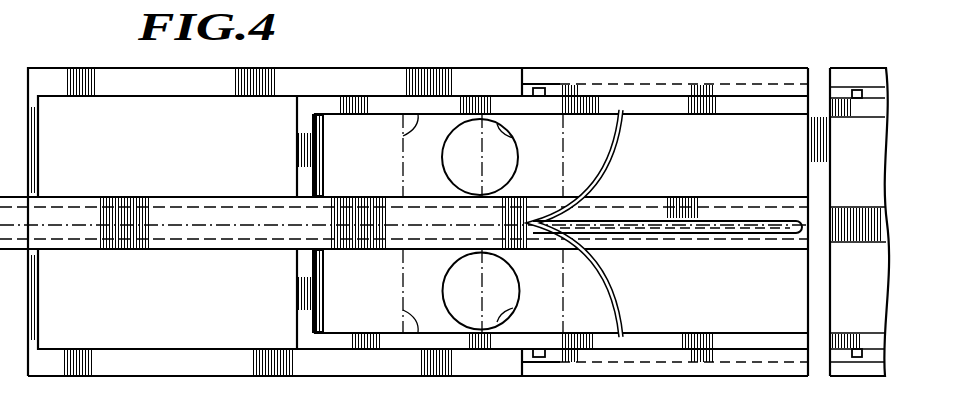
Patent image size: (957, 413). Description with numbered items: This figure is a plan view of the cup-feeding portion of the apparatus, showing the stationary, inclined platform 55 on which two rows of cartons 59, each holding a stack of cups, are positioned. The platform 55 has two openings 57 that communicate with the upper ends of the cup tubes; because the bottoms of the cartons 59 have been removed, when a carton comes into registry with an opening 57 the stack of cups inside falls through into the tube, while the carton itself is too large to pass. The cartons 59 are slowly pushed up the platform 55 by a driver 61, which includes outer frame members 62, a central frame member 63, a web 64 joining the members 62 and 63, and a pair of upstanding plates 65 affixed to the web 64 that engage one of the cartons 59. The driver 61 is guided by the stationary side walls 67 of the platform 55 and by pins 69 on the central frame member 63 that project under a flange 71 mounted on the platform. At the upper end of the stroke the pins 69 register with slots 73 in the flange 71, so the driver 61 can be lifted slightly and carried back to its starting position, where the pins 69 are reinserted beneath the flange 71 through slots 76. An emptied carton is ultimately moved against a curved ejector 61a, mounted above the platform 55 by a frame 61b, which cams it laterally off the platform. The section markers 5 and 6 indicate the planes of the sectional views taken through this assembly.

The platform 55 is at (82, 118).
The side walls 67 is at (110, 80).
The frame 61b is at (160, 207).
The driver 61 is at (288, 157).
The upstanding plates 65 is at (316, 137).
The web 64 is at (307, 300).
The openings 57 is at (450, 138).
The cartons 59 is at (481, 294).
The slots 76 is at (538, 88).
The outer frame members 62 is at (755, 102).
The pins 69 is at (740, 92).
The flange 71 is at (782, 92).
The slots 73 is at (854, 99).
The central frame member 63 is at (875, 180).
The curved ejector 61a is at (620, 150).
The section line 5- 5 is at (335, 226).
The section line 6- 6 is at (728, 43).